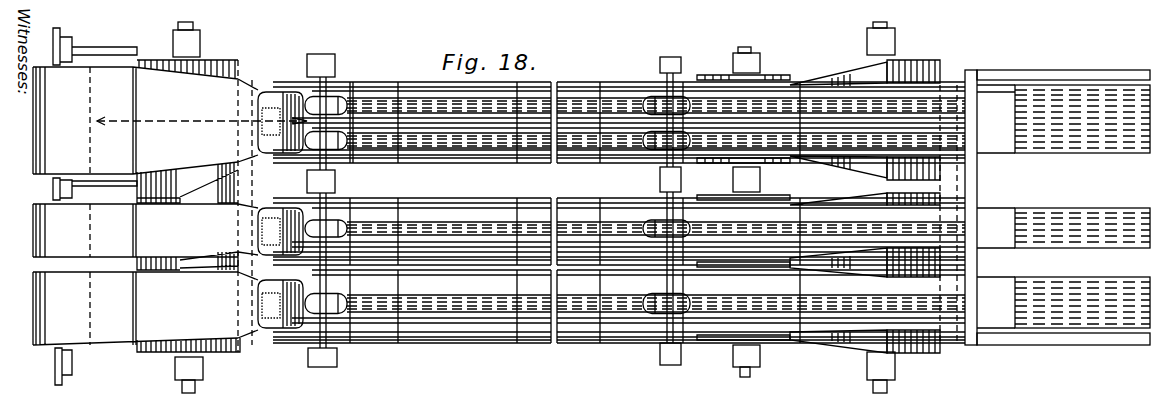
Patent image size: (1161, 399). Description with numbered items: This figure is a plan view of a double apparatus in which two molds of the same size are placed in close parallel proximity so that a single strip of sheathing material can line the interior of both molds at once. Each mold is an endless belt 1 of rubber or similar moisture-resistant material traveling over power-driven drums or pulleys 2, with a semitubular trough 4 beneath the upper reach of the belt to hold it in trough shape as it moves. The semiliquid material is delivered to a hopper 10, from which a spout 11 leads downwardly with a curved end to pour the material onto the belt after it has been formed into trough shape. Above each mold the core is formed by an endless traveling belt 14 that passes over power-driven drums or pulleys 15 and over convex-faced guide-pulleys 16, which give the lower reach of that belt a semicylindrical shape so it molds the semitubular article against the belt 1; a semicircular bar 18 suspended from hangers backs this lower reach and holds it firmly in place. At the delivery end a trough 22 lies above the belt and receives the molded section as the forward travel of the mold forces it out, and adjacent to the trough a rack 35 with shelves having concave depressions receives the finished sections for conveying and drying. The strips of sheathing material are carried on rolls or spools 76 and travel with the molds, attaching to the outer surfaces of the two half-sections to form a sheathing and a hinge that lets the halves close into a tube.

The endless belt 1 is at (222, 174).
The power-driven drums or pulleys 2 is at (238, 72).
The semitubular trough 4 is at (483, 203).
The hopper 10 is at (601, 210).
The spout 11 is at (268, 223).
The endless traveling belt 14 is at (533, 143).
The power-driven drums or pulleys 15 is at (202, 123).
The guide-pulleys 16 is at (334, 100).
The bar 18 is at (458, 230).
The trough 22 is at (902, 155).
The rack 35 is at (1045, 207).
The rolls or spools 76 is at (40, 178).